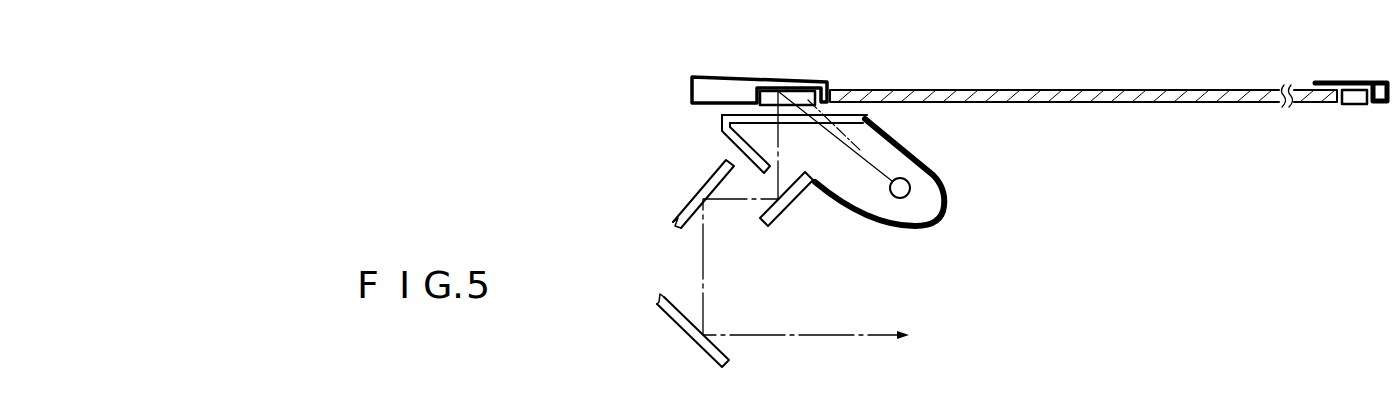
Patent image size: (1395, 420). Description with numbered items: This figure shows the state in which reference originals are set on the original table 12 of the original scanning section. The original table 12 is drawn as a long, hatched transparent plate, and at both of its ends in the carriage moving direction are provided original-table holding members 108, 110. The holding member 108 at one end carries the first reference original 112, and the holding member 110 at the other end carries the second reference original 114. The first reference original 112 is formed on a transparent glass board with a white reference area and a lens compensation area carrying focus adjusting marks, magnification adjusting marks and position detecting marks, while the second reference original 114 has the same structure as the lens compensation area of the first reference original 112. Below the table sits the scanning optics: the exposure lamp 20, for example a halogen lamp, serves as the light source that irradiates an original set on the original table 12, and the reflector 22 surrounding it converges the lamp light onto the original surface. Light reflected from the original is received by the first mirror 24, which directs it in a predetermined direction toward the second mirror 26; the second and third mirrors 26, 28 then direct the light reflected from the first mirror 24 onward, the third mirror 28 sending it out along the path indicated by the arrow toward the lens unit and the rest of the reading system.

The original table 12 is at (1081, 90).
The exposure lamp 20 is at (890, 188).
The reflector 22 is at (940, 172).
The first mirror 24 is at (797, 204).
The second mirror 26 is at (703, 180).
The third mirror 28 is at (694, 346).
The original-table holding member 108 is at (740, 77).
The original-table holding member 110 is at (1341, 79).
The first reference original 112 is at (801, 95).
The second reference original 114 is at (1353, 104).